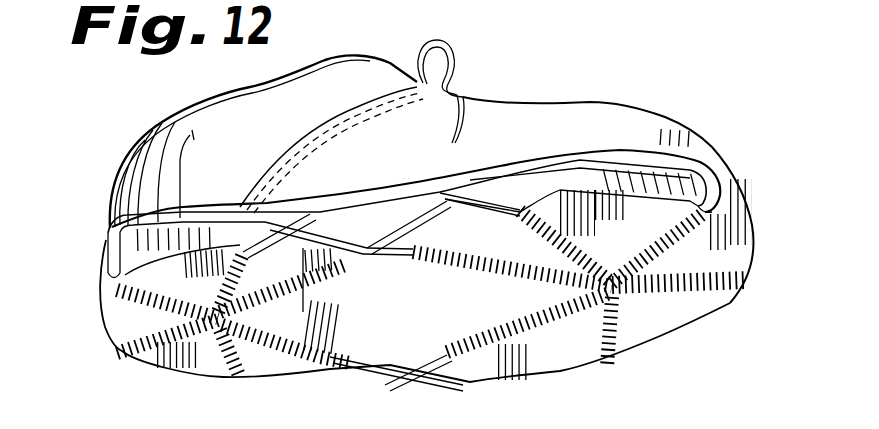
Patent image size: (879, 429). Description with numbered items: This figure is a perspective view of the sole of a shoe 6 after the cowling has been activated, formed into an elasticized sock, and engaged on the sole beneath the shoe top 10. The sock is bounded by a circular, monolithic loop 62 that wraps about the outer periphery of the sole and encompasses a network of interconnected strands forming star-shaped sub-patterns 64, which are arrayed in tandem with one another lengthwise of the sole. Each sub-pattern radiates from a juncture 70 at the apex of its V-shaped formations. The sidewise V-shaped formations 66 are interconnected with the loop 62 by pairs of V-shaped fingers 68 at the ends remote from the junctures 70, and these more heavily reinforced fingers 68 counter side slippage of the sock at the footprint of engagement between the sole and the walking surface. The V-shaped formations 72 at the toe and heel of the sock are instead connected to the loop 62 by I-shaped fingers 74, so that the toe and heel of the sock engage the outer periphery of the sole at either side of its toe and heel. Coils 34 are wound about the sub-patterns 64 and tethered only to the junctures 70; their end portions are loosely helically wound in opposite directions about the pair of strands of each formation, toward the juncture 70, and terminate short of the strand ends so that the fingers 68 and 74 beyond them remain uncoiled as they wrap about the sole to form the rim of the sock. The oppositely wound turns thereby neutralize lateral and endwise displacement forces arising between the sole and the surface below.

The shoe 6 is at (160, 122).
The shoe top 10 is at (248, 153).
The coils 34 is at (488, 380).
The loop 62 is at (323, 202).
The star-shaped sub-patterns 64 is at (257, 360).
The sidewise V-shaped formations 66 is at (553, 219).
The V-shaped fingers 68 is at (452, 204).
The junctures 70 is at (210, 350).
The V-shaped formations 72 is at (140, 315).
The I-shaped fingers 74 is at (107, 247).